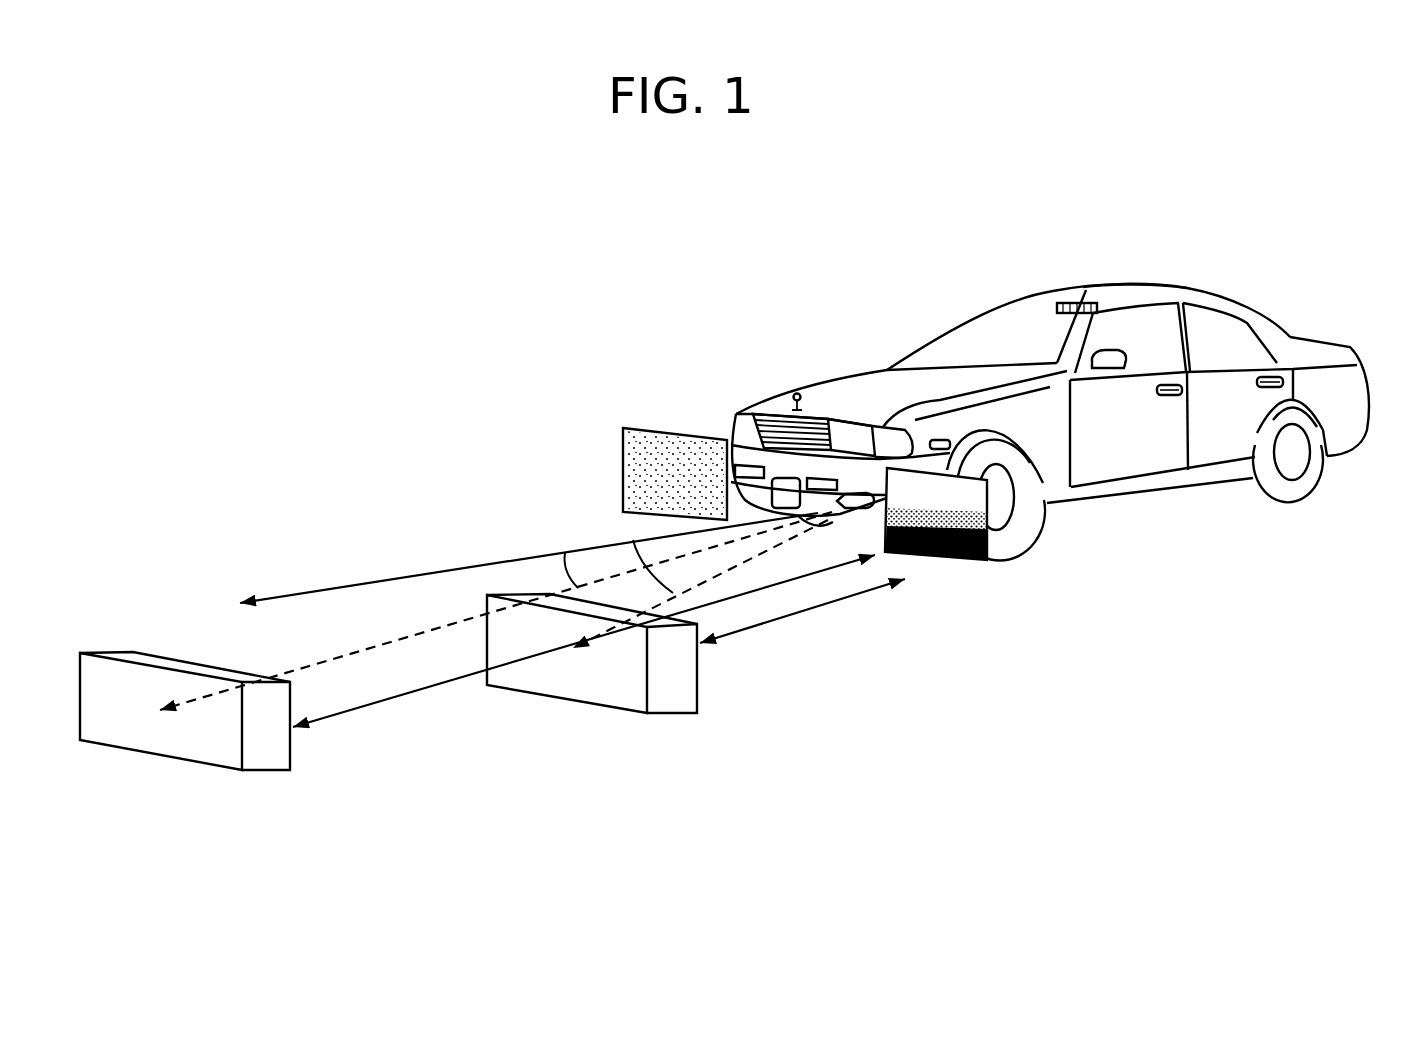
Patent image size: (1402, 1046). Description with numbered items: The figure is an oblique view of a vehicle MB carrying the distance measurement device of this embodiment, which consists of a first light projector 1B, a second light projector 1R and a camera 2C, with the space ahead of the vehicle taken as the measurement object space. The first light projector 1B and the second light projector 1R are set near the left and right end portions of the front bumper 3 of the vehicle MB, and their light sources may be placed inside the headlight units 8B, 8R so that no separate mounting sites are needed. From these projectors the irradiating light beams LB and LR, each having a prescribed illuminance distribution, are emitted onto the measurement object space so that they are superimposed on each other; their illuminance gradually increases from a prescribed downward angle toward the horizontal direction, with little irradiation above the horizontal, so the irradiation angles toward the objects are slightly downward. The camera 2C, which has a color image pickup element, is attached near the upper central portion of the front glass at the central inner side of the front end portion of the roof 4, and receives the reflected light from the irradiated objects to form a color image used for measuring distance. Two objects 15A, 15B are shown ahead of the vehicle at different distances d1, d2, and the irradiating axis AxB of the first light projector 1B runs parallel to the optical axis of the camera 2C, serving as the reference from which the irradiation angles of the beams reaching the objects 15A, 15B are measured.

The vehicle MB is at (1024, 369).
The camera 2C is at (1082, 303).
The roof 4 is at (1135, 298).
The front bumper 3 is at (820, 477).
The second light projector 1R is at (723, 407).
The headlight unit 8R is at (752, 465).
The first light projector 1B is at (879, 405).
The headlight unit 8B is at (863, 492).
The irradiating light beam LR is at (662, 430).
The irradiating light beam LB is at (962, 561).
The irradiating axis AxB is at (390, 578).
The distance d1 is at (802, 611).
The distance d2 is at (584, 641).
The object 15A is at (610, 690).
The object 15B is at (177, 748).